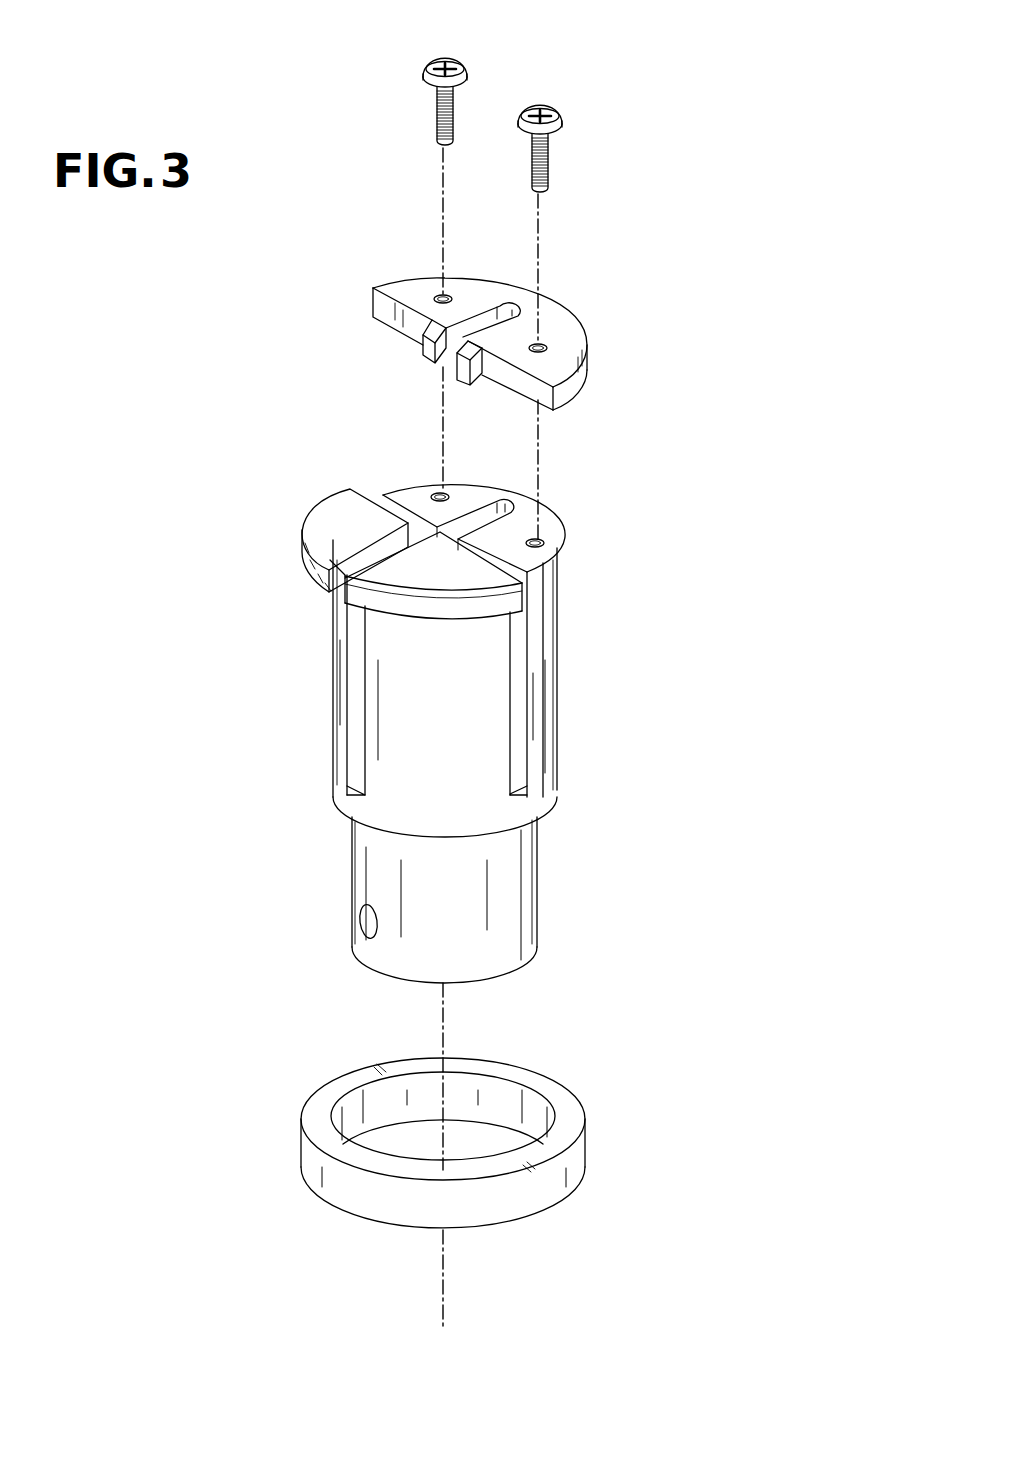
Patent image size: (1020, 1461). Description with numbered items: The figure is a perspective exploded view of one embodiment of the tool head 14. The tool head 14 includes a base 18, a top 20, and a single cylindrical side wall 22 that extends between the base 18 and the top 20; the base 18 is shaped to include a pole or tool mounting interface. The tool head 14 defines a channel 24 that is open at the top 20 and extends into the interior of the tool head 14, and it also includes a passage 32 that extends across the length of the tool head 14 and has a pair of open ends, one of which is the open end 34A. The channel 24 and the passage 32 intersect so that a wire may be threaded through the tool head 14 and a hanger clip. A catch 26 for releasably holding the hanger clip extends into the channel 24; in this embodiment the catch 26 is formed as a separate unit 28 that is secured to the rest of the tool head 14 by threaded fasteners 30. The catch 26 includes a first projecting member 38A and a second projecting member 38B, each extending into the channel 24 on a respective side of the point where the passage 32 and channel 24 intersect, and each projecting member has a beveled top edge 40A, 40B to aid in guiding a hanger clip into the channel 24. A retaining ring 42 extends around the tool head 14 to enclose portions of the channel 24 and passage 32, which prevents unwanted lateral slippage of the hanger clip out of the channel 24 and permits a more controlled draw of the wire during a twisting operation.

The tool head 14 is at (424, 713).
The base 18 is at (533, 817).
The top 20 is at (350, 515).
The side wall 22 is at (548, 665).
The channel 24 is at (517, 748).
The catch 26 is at (481, 331).
The separate unit 28 is at (511, 319).
The threaded fasteners 30 is at (433, 120).
The passage 32 is at (352, 739).
The open end 34A is at (357, 625).
The first projecting member 38A is at (432, 360).
The second projecting member 38B is at (465, 374).
The beveled top edge 40A is at (436, 332).
The beveled top edge 40B is at (476, 349).
The retaining ring 42 is at (576, 1157).